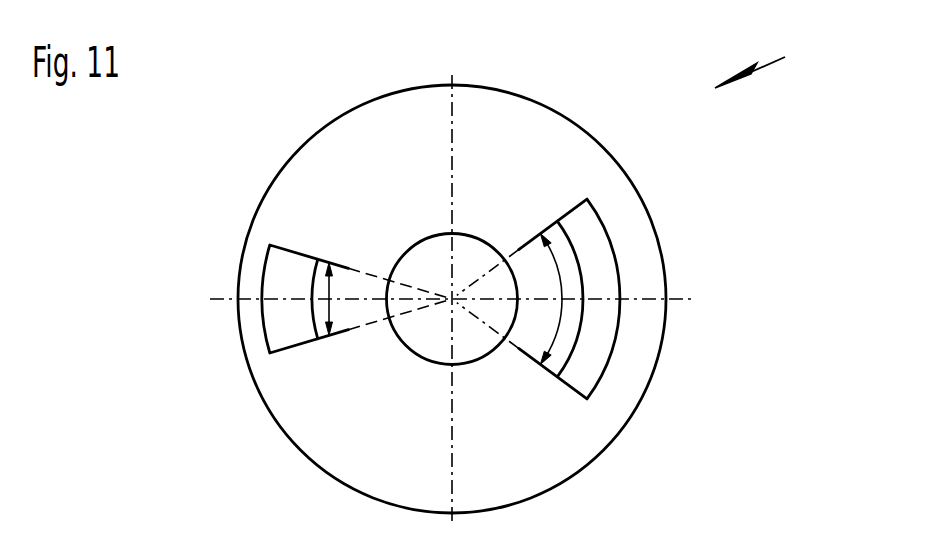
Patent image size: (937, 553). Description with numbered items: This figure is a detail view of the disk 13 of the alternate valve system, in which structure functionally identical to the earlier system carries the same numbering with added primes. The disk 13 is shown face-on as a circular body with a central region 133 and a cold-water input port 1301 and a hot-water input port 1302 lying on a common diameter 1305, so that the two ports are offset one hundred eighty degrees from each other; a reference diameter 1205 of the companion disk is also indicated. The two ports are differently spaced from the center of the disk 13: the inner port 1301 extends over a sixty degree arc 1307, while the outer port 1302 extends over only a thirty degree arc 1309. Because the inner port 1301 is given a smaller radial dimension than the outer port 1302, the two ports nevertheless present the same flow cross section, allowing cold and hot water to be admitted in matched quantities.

The disk 13 is at (768, 60).
The disc 133 is at (543, 145).
The diameter 1205 is at (247, 299).
The cold-water input port 1301 is at (595, 345).
The hot-water input port 1302 is at (273, 328).
The diameter 1305 is at (423, 342).
The arc 1307 is at (562, 277).
The arc 1309 is at (330, 291).